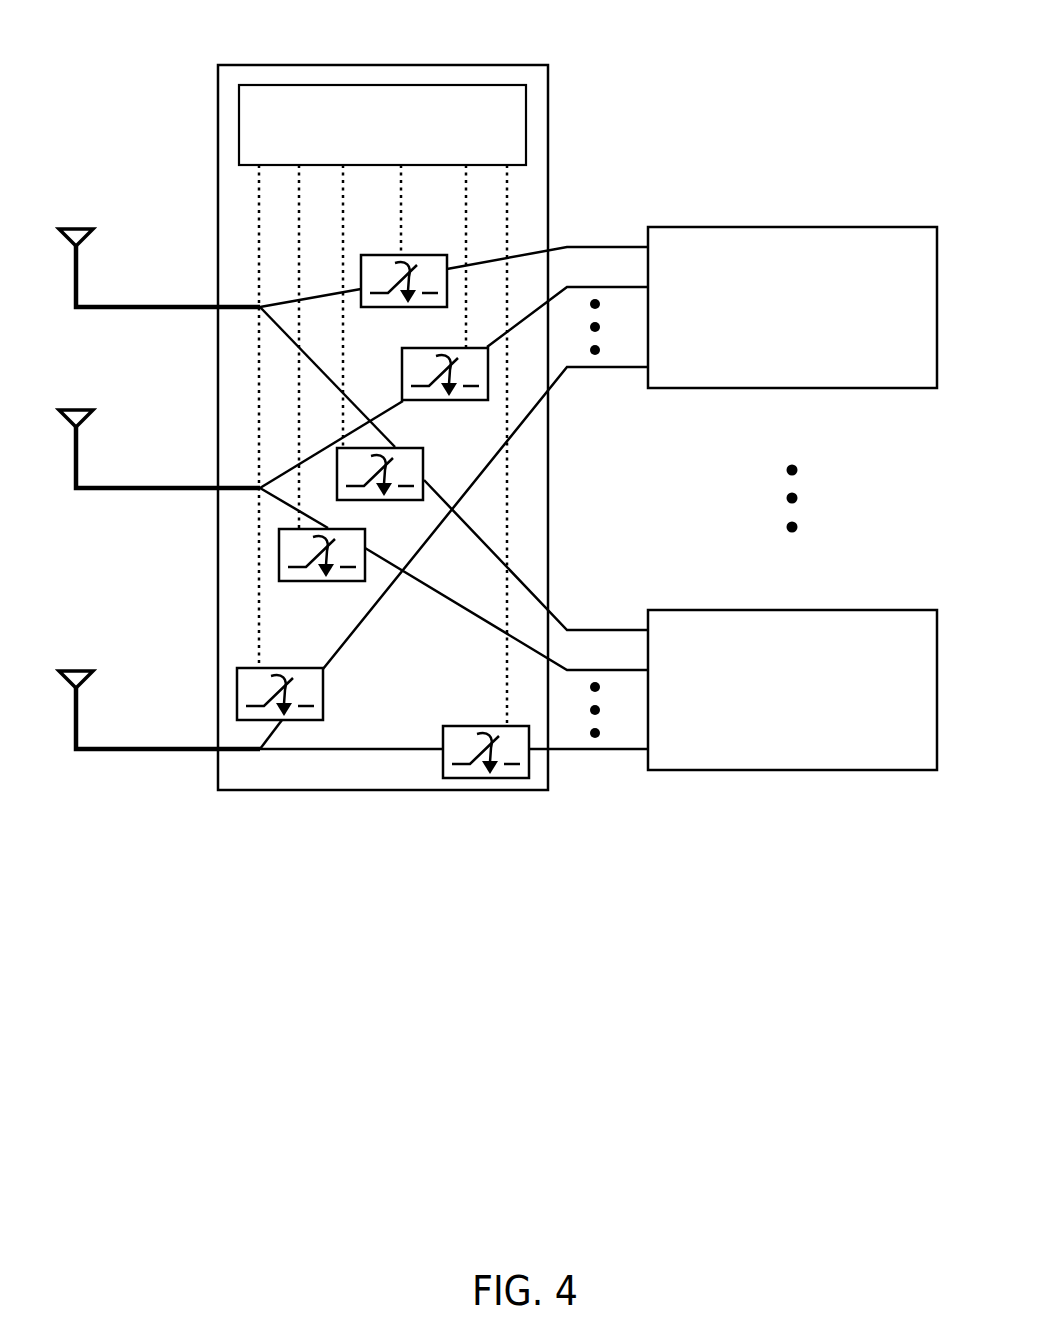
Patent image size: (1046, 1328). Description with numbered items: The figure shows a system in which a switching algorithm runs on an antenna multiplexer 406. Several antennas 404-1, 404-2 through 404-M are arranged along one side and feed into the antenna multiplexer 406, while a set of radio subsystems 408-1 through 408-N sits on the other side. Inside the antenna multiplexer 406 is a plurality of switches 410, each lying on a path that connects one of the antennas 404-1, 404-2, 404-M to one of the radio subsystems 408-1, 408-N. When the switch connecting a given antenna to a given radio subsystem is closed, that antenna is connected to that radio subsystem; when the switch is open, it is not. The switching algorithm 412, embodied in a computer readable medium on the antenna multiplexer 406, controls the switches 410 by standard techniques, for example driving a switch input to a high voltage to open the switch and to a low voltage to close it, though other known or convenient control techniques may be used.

The antenna multiplexer 406 is at (425, 65).
The switching algorithm 412 is at (362, 153).
The antenna 404-1 is at (73, 226).
The antenna 404-2 is at (73, 407).
The antenna 404-M is at (73, 668).
The switches 410 is at (463, 405).
The radio subsystem 408-1 is at (758, 337).
The radio subsystem 408-N is at (755, 720).